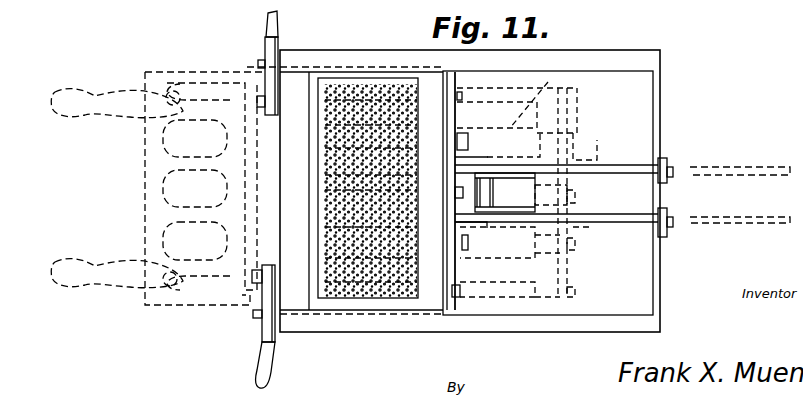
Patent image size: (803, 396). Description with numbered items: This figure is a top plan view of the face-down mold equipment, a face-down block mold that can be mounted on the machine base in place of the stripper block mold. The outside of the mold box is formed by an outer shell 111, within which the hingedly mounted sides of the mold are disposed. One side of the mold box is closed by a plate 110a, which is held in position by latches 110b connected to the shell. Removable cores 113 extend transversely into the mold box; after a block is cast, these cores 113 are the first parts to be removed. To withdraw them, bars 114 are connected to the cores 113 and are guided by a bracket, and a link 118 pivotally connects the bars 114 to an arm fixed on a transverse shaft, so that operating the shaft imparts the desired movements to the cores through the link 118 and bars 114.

The plate 110a is at (297, 217).
The latches 110b is at (267, 20).
The outer shell 111 is at (337, 60).
The removable cores 113 is at (560, 67).
The bars 114 is at (615, 170).
The link 118 is at (510, 172).